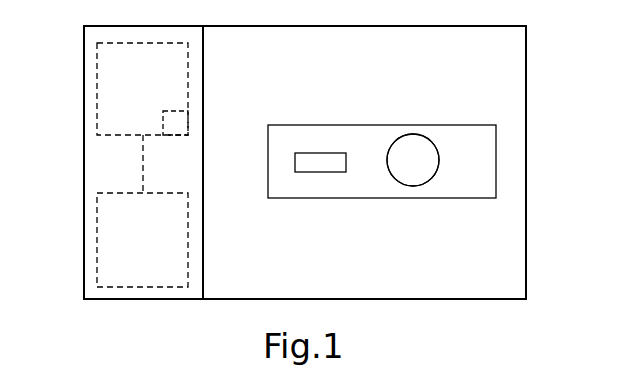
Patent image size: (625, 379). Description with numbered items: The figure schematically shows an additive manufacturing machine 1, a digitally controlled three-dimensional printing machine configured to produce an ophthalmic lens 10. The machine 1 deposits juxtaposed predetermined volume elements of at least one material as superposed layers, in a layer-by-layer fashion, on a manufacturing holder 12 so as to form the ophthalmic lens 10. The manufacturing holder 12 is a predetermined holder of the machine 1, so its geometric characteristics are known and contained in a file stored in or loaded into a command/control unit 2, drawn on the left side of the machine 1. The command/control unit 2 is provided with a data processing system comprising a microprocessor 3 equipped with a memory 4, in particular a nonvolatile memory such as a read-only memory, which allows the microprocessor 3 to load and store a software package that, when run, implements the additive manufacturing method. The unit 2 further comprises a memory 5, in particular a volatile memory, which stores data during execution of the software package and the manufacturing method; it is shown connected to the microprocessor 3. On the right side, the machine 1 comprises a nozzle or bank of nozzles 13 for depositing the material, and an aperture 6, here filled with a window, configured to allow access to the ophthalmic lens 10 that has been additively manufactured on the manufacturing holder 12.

The additive manufacturing machine 1 is at (526, 58).
The command/control unit 2 is at (85, 287).
The microprocessor 3 is at (97, 92).
The memory 4 is at (182, 122).
The memory 5 is at (97, 230).
The aperture 6 is at (480, 162).
The ophthalmic lens 10 is at (418, 178).
The manufacturing holder 12 is at (411, 134).
The nozzle or bank of nozzles 13 is at (319, 153).